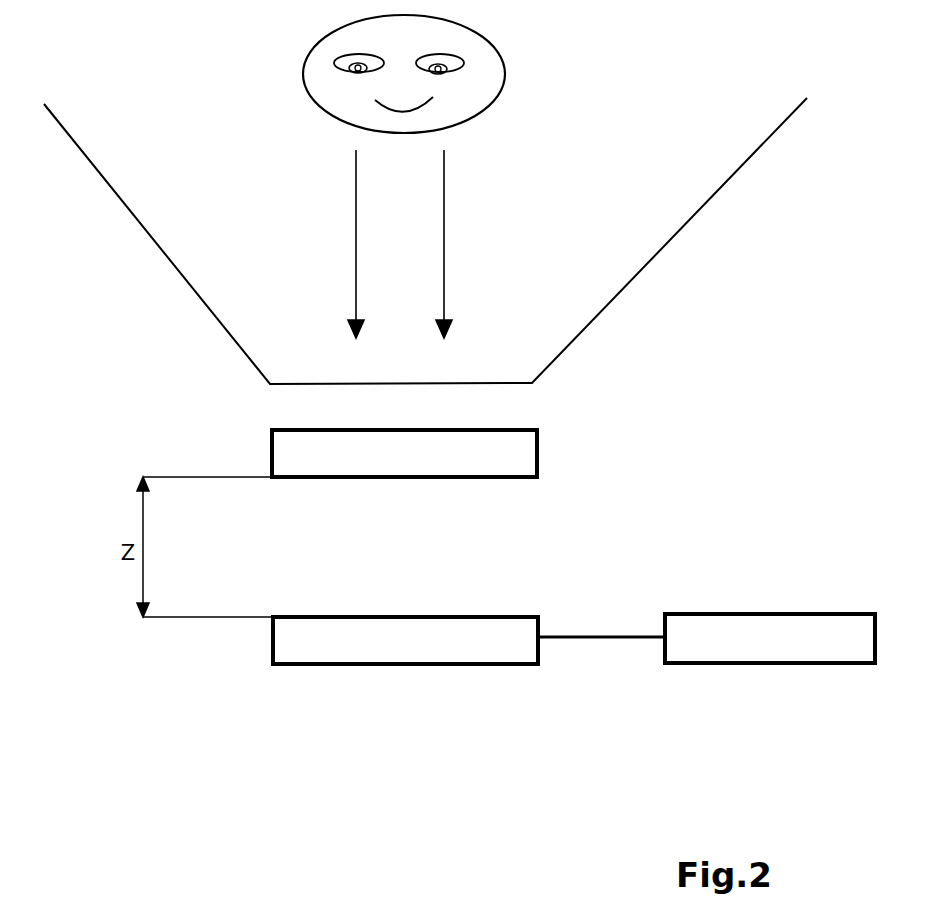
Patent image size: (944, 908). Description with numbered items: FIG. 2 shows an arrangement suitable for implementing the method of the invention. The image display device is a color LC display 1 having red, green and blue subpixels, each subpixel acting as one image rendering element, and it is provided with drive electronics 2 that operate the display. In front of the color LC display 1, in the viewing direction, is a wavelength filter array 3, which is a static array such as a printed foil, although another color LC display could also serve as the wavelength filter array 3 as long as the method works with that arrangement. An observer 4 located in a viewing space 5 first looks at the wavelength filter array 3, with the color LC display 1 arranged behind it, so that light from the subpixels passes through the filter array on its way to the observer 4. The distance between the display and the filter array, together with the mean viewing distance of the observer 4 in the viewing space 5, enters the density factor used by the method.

The color LC display 1 is at (272, 638).
The drive electronics 2 is at (757, 632).
The wavelength filter array 3 is at (272, 452).
The observer 4 is at (518, 48).
The viewing space 5 is at (650, 219).